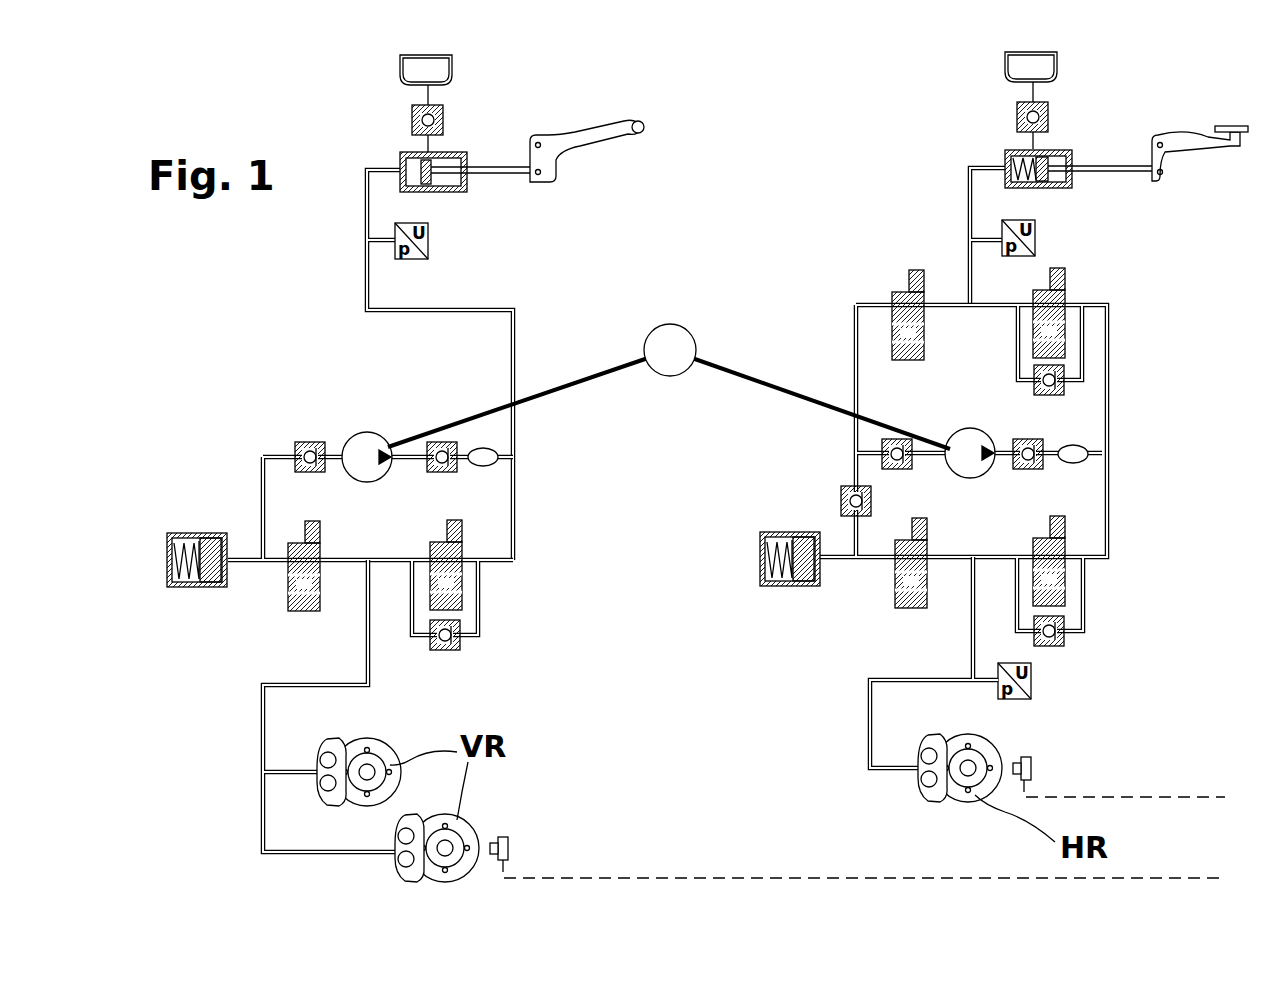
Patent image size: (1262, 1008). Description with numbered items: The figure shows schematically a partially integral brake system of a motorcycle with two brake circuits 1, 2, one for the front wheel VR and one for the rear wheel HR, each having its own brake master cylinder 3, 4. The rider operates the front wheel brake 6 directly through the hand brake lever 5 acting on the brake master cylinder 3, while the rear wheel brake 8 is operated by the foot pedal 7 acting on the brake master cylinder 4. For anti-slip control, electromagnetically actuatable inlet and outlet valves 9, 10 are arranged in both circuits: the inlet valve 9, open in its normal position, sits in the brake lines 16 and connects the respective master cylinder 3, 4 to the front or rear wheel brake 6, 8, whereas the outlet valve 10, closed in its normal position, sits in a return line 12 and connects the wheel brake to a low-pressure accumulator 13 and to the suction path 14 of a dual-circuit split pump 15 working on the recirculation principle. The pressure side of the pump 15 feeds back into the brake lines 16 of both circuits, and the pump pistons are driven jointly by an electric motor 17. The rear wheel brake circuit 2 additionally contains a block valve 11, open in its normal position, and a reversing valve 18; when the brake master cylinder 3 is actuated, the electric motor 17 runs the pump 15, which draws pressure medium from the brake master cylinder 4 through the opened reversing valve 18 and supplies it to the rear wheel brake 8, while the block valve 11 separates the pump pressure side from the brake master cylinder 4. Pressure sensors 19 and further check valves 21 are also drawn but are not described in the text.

The front wheel brake circuit 1 is at (380, 167).
The rear wheel brake circuit 2 is at (988, 166).
The brake master cylinder 3 is at (458, 152).
The brake master cylinder 4 is at (1062, 150).
The hand brake lever 5 is at (575, 150).
The front wheel brake 6 is at (410, 870).
The foot pedal 7 is at (1205, 145).
The rear wheel brake 8 is at (932, 795).
The inlet valve 9 is at (430, 550).
The outlet valve 10 is at (288, 580).
The block valve 11 is at (1066, 294).
The return line 12 is at (244, 555).
The low-pressure accumulator 13 is at (194, 590).
The suction path 14 is at (282, 450).
The dual-circuit split pump 15 is at (368, 443).
The brake lines 16 is at (517, 507).
The electric motor 17 is at (668, 368).
The reversing valve 18 is at (900, 290).
The pressure sensor 19 is at (428, 242).
The check valve 21 is at (440, 474).